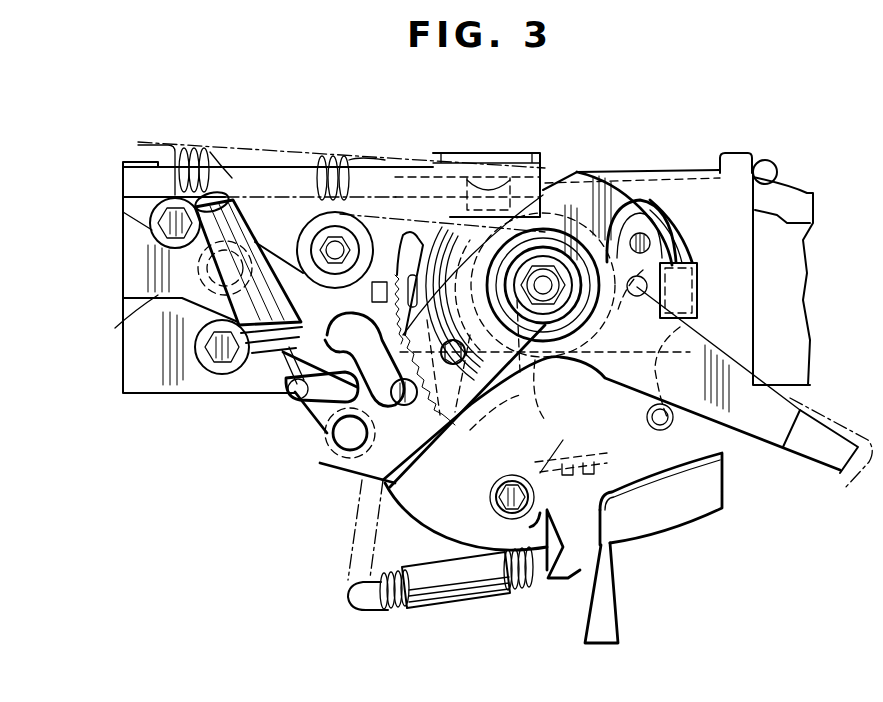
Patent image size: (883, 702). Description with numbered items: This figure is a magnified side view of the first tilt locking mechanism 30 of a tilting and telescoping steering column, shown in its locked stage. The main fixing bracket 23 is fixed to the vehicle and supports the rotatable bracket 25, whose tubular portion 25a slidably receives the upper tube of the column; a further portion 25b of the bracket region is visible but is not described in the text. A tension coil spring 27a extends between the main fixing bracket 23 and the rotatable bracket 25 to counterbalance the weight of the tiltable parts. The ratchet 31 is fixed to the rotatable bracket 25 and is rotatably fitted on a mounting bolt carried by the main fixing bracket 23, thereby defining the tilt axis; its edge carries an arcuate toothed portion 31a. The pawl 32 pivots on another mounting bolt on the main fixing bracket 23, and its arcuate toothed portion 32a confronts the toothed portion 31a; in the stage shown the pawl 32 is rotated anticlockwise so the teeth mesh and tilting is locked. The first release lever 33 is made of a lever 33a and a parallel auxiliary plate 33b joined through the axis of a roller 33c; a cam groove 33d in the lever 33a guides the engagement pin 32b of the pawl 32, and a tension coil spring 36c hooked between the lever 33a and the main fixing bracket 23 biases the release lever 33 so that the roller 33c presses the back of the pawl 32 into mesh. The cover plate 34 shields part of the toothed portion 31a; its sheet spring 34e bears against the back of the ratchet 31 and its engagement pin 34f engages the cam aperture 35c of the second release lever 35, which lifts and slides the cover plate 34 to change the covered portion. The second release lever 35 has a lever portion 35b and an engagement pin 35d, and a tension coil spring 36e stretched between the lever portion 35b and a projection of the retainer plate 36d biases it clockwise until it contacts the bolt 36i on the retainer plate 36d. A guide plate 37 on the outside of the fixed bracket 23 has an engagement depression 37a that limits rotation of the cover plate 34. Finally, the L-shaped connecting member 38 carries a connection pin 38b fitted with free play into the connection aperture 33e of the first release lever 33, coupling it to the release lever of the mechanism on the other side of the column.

The main fixing bracket 23 is at (187, 382).
The rotatable bracket 25 is at (728, 192).
The tubular portion 25a is at (802, 243).
The roller 25b is at (740, 210).
The tension coil spring 27a is at (268, 153).
The first tilt locking mechanism 30 is at (630, 195).
The ratchet 31 is at (586, 172).
The arcuate toothed portion 31a is at (395, 260).
The pawl 32 is at (300, 240).
The arcuate toothed portion 32a is at (467, 406).
The engagement pin 32b is at (482, 509).
The first release lever 33 is at (752, 428).
The lever 33a is at (792, 416).
The auxiliary plate 33b is at (643, 419).
The roller 33c is at (330, 458).
The cam groove 33d is at (368, 480).
The connection aperture 33e is at (413, 266).
The cover plate 34 is at (405, 262).
The sheet spring 34e is at (676, 236).
The engagement pin 34f is at (645, 343).
The second release lever 35 is at (703, 502).
The lever portion 35b is at (604, 596).
The cam aperture 35c is at (652, 240).
The engagement pin 35d is at (661, 428).
The tension coil spring 36c is at (258, 370).
The retainer plate 36d is at (360, 522).
The tension coil spring 36e is at (400, 614).
The bolt 36i is at (500, 514).
The guide plate 37 is at (120, 319).
The engagement depression 37a is at (370, 310).
The connecting member 38 is at (604, 446).
The connection pin 38b is at (480, 422).